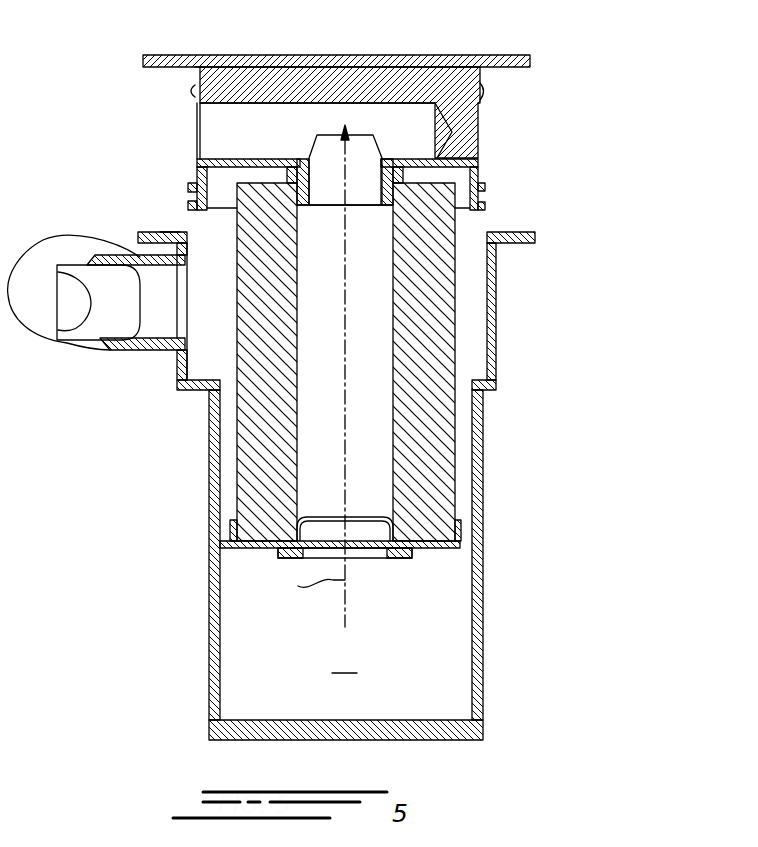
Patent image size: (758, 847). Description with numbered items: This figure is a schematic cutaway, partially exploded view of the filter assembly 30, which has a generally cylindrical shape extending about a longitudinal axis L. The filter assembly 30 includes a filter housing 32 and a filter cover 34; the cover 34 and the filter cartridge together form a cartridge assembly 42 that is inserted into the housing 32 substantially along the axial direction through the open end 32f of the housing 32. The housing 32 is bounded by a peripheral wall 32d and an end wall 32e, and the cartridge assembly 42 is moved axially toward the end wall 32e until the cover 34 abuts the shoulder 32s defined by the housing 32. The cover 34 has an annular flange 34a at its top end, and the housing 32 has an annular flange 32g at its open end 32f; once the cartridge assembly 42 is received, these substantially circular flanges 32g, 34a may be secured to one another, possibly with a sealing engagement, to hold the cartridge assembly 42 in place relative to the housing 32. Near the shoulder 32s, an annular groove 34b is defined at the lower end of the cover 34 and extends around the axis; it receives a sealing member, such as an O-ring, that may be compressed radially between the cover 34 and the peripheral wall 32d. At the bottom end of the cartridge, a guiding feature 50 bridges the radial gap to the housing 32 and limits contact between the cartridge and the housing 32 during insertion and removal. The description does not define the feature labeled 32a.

The filter assembly 30 is at (622, 127).
The filter housing 32 is at (498, 470).
The side port 32a is at (185, 310).
The peripheral wall 32d is at (496, 298).
The end wall 32e is at (427, 740).
The open end 32f is at (475, 240).
The annular flange 32g is at (168, 232).
The shoulder 32s is at (496, 388).
The filter cover 34 is at (462, 100).
The annular flange 34a is at (170, 55).
The annular groove 34b is at (488, 195).
The cartridge assembly 42 is at (535, 88).
The guiding feature 50 is at (228, 526).